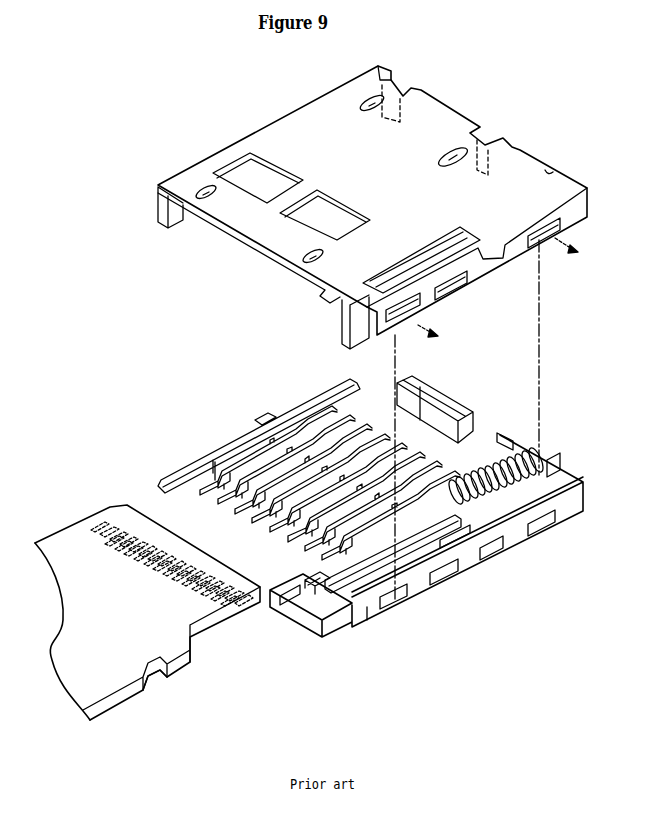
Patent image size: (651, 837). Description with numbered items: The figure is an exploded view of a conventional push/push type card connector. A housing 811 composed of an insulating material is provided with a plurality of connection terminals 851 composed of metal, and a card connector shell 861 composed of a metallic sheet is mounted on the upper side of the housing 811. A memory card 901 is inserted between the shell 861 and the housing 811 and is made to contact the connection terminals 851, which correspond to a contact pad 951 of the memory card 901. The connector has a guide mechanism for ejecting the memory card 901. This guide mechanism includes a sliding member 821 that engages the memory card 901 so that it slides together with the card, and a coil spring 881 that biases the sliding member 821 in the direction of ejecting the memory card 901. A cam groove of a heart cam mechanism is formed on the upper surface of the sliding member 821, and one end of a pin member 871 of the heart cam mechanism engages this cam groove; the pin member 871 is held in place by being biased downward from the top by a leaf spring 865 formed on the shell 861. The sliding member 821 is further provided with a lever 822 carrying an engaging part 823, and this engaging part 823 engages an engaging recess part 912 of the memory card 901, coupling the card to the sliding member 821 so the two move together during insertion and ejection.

The card connector shell 861 is at (441, 113).
The leaf spring 865 is at (431, 258).
The connection terminals 851 is at (347, 412).
The housing 811 is at (413, 430).
The coil spring 881 is at (488, 462).
The sliding member 821 is at (475, 522).
The lever 822 is at (408, 545).
The pin member 871 is at (458, 536).
The engaging part 823 is at (307, 586).
The memory card 901 is at (73, 533).
The contact pad 951 is at (137, 553).
The engaging recess part 912 is at (148, 685).